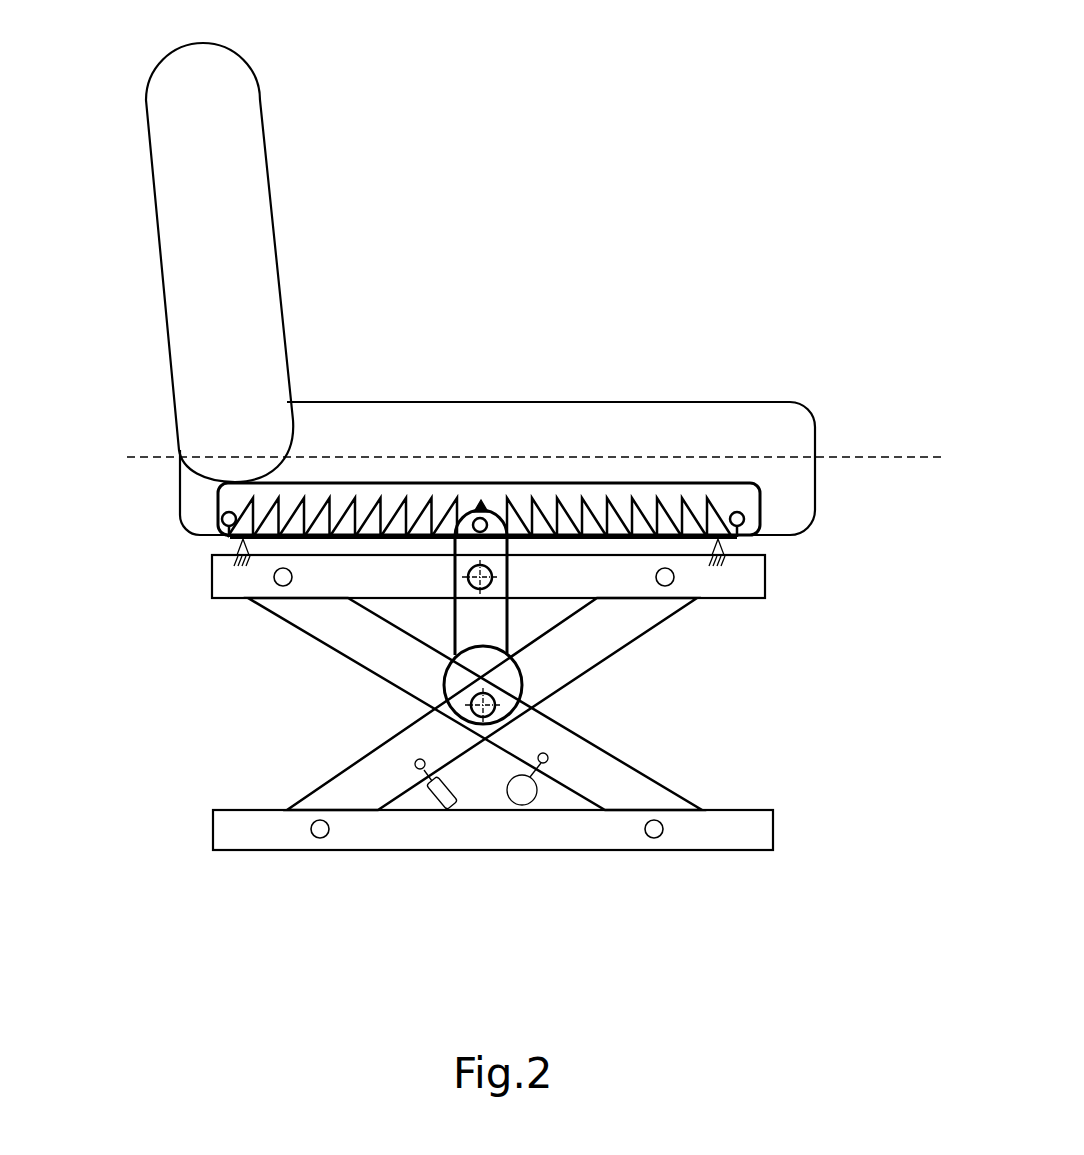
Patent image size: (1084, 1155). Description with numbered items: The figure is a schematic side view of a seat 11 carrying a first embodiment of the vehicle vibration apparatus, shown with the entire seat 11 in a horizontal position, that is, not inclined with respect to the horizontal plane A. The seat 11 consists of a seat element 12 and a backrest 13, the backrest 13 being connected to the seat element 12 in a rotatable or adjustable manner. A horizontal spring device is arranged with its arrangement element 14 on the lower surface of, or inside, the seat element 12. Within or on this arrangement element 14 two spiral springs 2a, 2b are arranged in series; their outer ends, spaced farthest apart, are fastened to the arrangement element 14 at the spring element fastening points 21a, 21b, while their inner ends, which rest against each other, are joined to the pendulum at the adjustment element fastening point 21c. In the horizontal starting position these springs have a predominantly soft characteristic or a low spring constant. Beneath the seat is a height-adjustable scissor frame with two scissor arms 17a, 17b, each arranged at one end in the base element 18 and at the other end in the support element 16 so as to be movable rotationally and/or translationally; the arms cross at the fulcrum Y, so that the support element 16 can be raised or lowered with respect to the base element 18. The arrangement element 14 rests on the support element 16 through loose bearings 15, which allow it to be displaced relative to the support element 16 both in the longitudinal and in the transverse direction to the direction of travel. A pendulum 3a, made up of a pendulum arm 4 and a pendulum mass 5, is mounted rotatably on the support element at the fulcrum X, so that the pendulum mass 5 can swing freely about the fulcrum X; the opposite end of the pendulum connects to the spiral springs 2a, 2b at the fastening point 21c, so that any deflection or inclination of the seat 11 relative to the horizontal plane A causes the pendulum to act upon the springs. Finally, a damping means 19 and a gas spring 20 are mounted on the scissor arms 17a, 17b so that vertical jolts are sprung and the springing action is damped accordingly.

The seat 11 is at (652, 141).
The seat element 12 is at (372, 425).
The backrest 13 is at (245, 147).
The arrangement element 14 is at (750, 495).
The loose bearings 15 is at (238, 552).
The support element 16 is at (740, 585).
The scissor arm 17a is at (605, 640).
The scissor arm 17b is at (585, 747).
The base element 18 is at (720, 826).
The damping means 19 is at (447, 808).
The gas spring 20 is at (540, 800).
The spring element fastening point 21a is at (780, 533).
The spring element fastening point 21b is at (222, 520).
The adjustment element fastening point 21c is at (490, 510).
The spiral spring 2a is at (745, 520).
The spiral spring 2b is at (240, 510).
The pendulum 3a is at (428, 669).
The pendulum arm 4 is at (467, 630).
The pendulum mass 5 is at (445, 705).
The horizontal plane A is at (822, 458).
The fulcrum X is at (483, 575).
The fulcrum Y is at (500, 705).